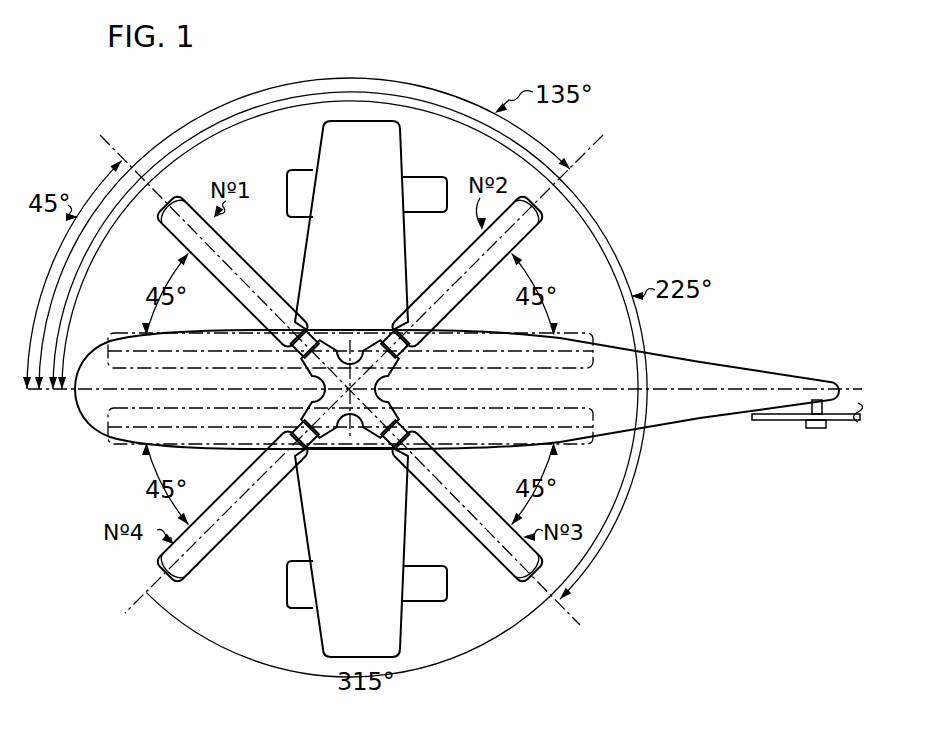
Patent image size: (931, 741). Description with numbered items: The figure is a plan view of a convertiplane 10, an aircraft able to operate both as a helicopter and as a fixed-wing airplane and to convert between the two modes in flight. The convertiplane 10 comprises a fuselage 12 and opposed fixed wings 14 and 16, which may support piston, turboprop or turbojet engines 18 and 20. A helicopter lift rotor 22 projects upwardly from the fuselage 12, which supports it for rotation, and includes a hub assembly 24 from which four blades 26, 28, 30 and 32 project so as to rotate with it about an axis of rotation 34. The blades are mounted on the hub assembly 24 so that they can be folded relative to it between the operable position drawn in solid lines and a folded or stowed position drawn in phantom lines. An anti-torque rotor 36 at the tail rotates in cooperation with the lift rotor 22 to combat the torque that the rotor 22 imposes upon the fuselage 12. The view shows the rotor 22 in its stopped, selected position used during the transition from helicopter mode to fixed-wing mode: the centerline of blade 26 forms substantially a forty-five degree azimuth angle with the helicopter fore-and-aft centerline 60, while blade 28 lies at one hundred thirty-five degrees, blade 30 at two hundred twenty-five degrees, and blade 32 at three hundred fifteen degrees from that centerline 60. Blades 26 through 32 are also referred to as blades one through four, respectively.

The convertiplane 10 is at (705, 110).
The fuselage 12 is at (683, 372).
The fixed wing 14 is at (365, 243).
The fixed wing 16 is at (362, 548).
The engine 18 is at (300, 180).
The engine 20 is at (298, 580).
The helicopter lift rotor 22 is at (334, 339).
The hub assembly 24 is at (320, 438).
The blade 26 is at (237, 256).
The blade 28 is at (526, 232).
The blade 30 is at (505, 566).
The blade 32 is at (187, 560).
The axis of rotation 34 is at (360, 350).
The anti-torque rotor 36 is at (790, 420).
The helicopter fore-and-aft centerline 60 is at (703, 390).